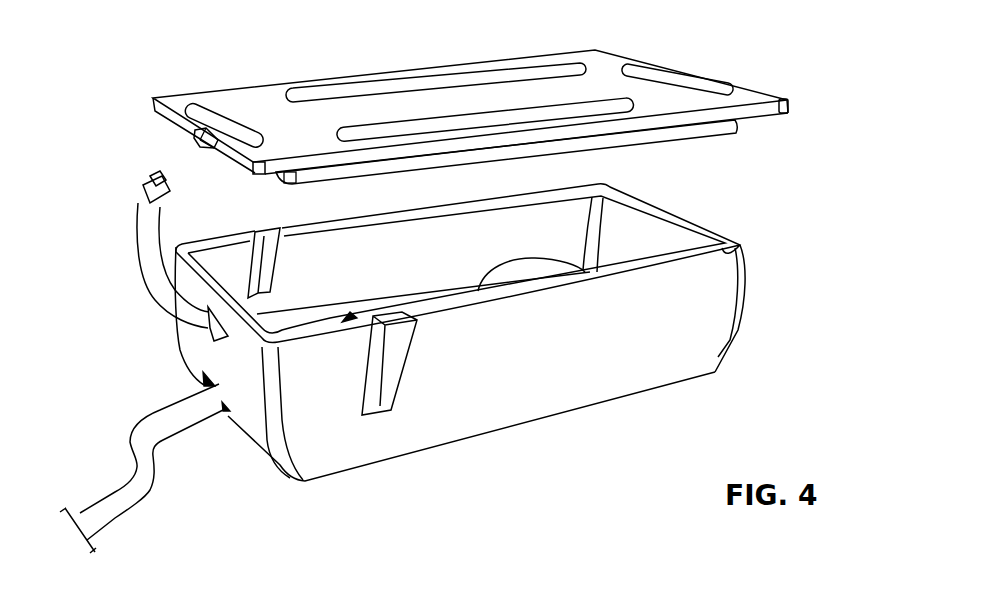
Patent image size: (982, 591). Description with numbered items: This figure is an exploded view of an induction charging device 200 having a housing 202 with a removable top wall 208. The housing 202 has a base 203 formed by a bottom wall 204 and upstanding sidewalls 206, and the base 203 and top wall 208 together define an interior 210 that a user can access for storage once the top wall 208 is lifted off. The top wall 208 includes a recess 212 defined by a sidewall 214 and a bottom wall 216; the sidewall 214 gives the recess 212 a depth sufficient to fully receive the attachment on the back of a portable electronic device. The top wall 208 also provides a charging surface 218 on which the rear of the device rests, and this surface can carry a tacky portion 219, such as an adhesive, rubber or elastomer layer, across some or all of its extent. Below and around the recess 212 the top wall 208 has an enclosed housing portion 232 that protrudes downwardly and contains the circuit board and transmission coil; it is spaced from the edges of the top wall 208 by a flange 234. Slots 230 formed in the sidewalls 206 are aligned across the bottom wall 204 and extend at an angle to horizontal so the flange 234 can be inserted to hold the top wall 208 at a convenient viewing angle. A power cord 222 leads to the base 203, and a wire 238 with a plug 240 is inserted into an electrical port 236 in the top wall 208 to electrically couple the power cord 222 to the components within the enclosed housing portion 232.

The induction charging device 200 is at (832, 32).
The housing 202 is at (723, 353).
The base 203 is at (500, 402).
The bottom wall 204 is at (355, 320).
The upstanding sidewalls 206 is at (663, 363).
The top wall 208 is at (657, 62).
The interior 210 is at (684, 234).
The recess 212 is at (318, 90).
The sidewall 214 is at (404, 83).
The bottom wall 216 is at (482, 72).
The charging surface 218 is at (780, 92).
The tacky portion 219 is at (212, 118).
The power cord 222 is at (147, 486).
The slots 230 is at (398, 380).
The enclosed housing portion 232 is at (672, 131).
The flange 234 is at (727, 98).
The electrical port 236 is at (192, 135).
The wire 238 is at (148, 298).
The plug 240 is at (137, 190).